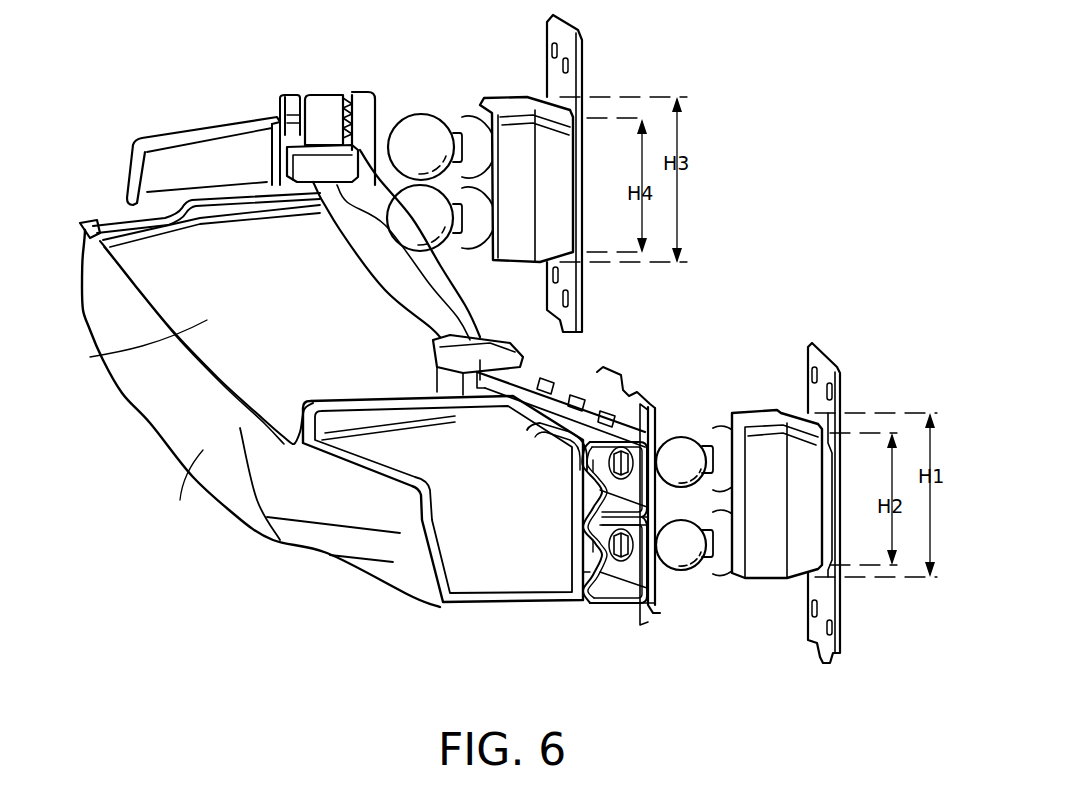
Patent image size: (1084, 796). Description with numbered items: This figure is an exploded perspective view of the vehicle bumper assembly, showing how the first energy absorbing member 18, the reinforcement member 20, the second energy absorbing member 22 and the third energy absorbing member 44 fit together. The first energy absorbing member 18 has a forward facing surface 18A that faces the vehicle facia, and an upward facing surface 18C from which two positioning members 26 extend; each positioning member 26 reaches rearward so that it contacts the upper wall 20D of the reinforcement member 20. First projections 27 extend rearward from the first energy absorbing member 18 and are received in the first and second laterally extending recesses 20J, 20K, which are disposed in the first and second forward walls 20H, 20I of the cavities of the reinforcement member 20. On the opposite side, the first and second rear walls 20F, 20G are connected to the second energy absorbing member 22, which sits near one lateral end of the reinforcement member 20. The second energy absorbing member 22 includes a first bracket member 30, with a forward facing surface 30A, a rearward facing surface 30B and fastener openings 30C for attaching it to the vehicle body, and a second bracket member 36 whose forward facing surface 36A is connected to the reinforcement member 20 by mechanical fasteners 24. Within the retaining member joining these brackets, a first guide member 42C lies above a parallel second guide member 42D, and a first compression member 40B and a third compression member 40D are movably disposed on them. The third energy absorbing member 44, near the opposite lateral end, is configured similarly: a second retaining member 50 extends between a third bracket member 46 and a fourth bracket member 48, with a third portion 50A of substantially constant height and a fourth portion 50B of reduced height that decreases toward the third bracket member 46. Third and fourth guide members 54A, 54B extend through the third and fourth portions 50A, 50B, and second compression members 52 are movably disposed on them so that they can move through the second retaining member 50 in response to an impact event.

The first energy absorbing member 18 is at (143, 425).
The forward facing surface 18A is at (185, 492).
The upward facing surface 18C is at (127, 345).
The reinforcement member 20 is at (433, 298).
The upper wall 20D is at (523, 377).
The first rear wall 20F is at (640, 457).
The second rear wall 20G is at (653, 563).
The first forward wall 20H is at (580, 450).
The second forward wall 20I is at (580, 587).
The first laterally extending recess 20J is at (580, 493).
The second laterally extending recess 20K is at (580, 573).
The second energy absorbing member 22 is at (755, 403).
The mechanical fasteners 24 is at (617, 563).
The positioning member 26 is at (330, 228).
The first projection 27 is at (583, 480).
The first bracket member 30 is at (829, 490).
The forward facing surface 30A is at (813, 397).
The rearward facing surface 30B is at (843, 630).
The fastener openings 30C is at (830, 393).
The second bracket member 36 is at (620, 377).
The forward facing surface 36A is at (643, 603).
The first compression member 40B is at (680, 427).
The third compression member 40D is at (687, 570).
The first guide member 42C is at (713, 430).
The second guide member 42D is at (720, 577).
The third energy absorbing member 44 is at (526, 145).
The third bracket member 46 is at (560, 30).
The fourth bracket member 48 is at (368, 90).
The second retaining member 50 is at (520, 97).
The third portion 50A is at (520, 263).
The fourth portion 50B is at (567, 263).
The second compression member 52 is at (407, 115).
The third guide member 54A is at (453, 133).
The fourth guide member 54B is at (433, 267).